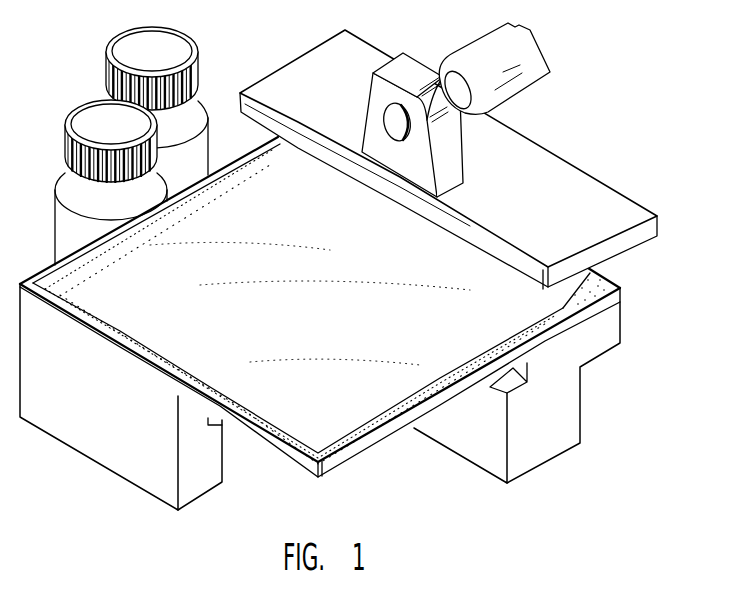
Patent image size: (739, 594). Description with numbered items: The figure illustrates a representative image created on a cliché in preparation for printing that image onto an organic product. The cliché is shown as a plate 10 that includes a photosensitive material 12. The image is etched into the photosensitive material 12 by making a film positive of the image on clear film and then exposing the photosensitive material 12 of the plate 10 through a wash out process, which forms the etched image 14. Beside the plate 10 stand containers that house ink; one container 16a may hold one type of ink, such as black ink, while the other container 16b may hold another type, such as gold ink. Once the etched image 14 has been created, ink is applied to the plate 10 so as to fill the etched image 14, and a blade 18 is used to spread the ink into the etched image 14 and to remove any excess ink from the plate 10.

The plate 10 is at (109, 415).
The photosensitive material 12 is at (320, 348).
The etched image 14 is at (357, 289).
The container 16a is at (126, 136).
The container 16b is at (166, 67).
The blade 18 is at (565, 300).